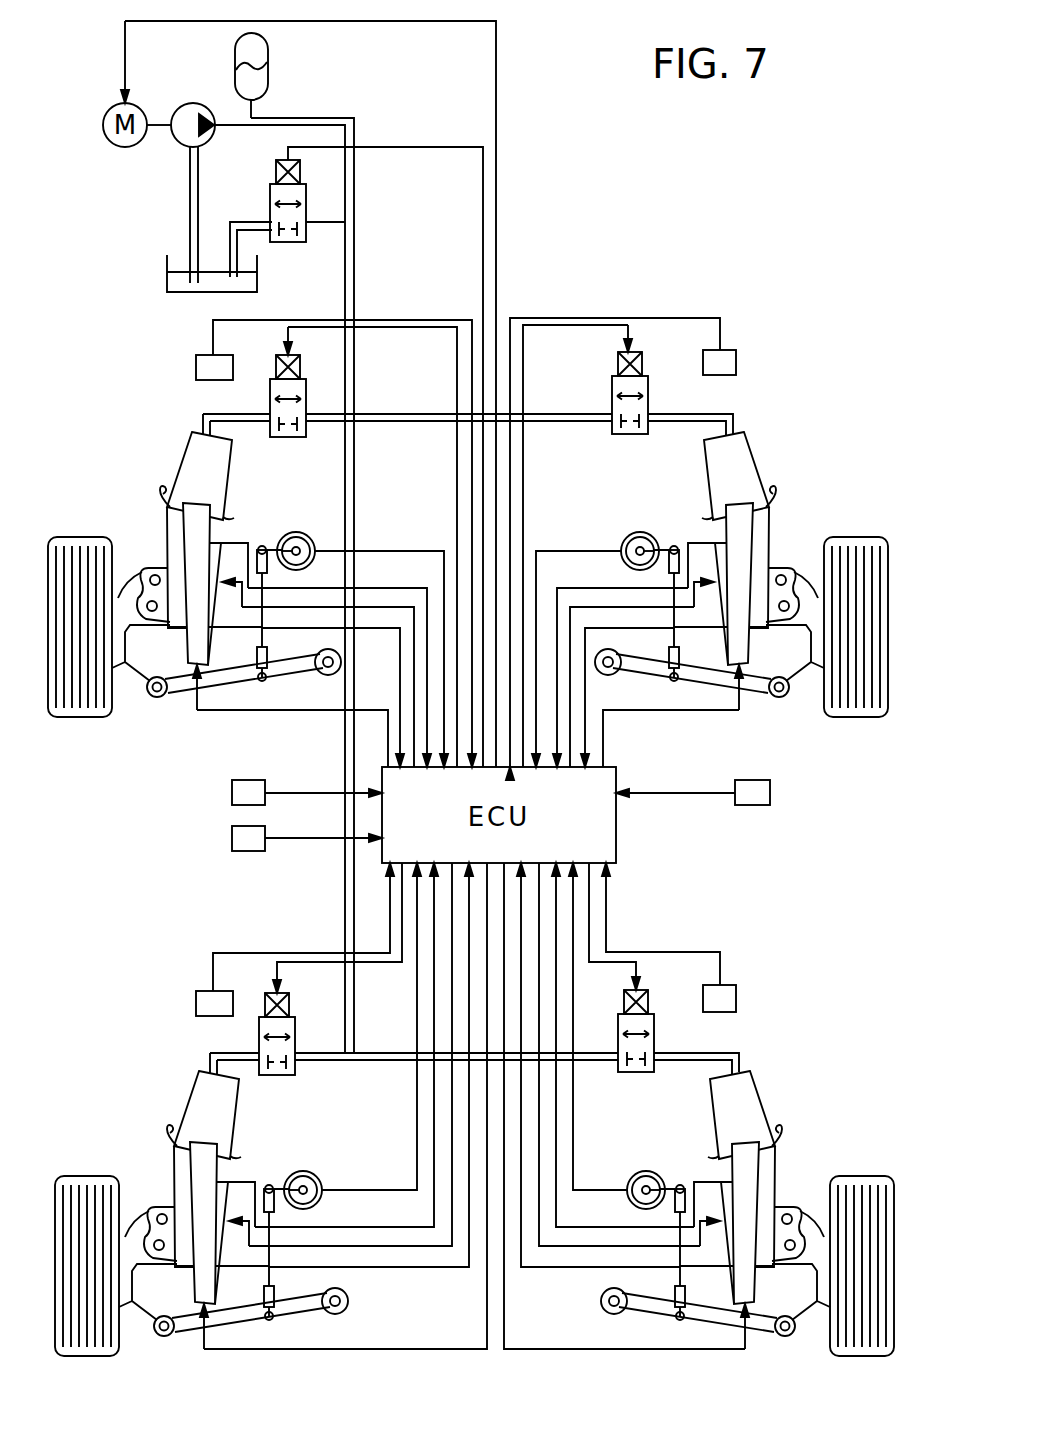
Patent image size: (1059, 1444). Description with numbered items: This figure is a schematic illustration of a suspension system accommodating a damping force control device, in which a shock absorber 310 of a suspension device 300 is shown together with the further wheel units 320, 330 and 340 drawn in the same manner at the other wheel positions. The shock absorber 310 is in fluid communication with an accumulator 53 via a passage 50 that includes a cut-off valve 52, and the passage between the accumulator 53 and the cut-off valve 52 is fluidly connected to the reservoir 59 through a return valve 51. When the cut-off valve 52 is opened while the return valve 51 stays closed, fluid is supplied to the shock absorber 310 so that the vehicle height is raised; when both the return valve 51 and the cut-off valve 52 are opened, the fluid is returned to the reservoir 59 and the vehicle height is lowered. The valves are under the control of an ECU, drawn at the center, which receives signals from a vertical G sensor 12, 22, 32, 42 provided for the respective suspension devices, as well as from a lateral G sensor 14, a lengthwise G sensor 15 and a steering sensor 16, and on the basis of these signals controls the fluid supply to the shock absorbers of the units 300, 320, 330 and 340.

The vertical G sensor 12 is at (736, 1000).
The lateral G sensor 14 is at (232, 840).
The lengthwise G sensor 15 is at (232, 793).
The steering sensor 16 is at (770, 792).
The vertical G sensor 22 is at (196, 1005).
The vertical G sensor 32 is at (723, 362).
The vertical G sensor 42 is at (195, 367).
The passage 50 is at (347, 248).
The return valve 51 is at (290, 238).
The cut-off valve 52 is at (287, 433).
The accumulator 53 is at (265, 50).
The reservoir 59 is at (180, 290).
The suspension device 300 is at (699, 1109).
The shock absorber 310 is at (745, 1182).
The front left wheel suspension unit 320 is at (195, 1185).
The rear right wheel suspension unit 330 is at (745, 543).
The rear left wheel suspension unit 340 is at (190, 548).